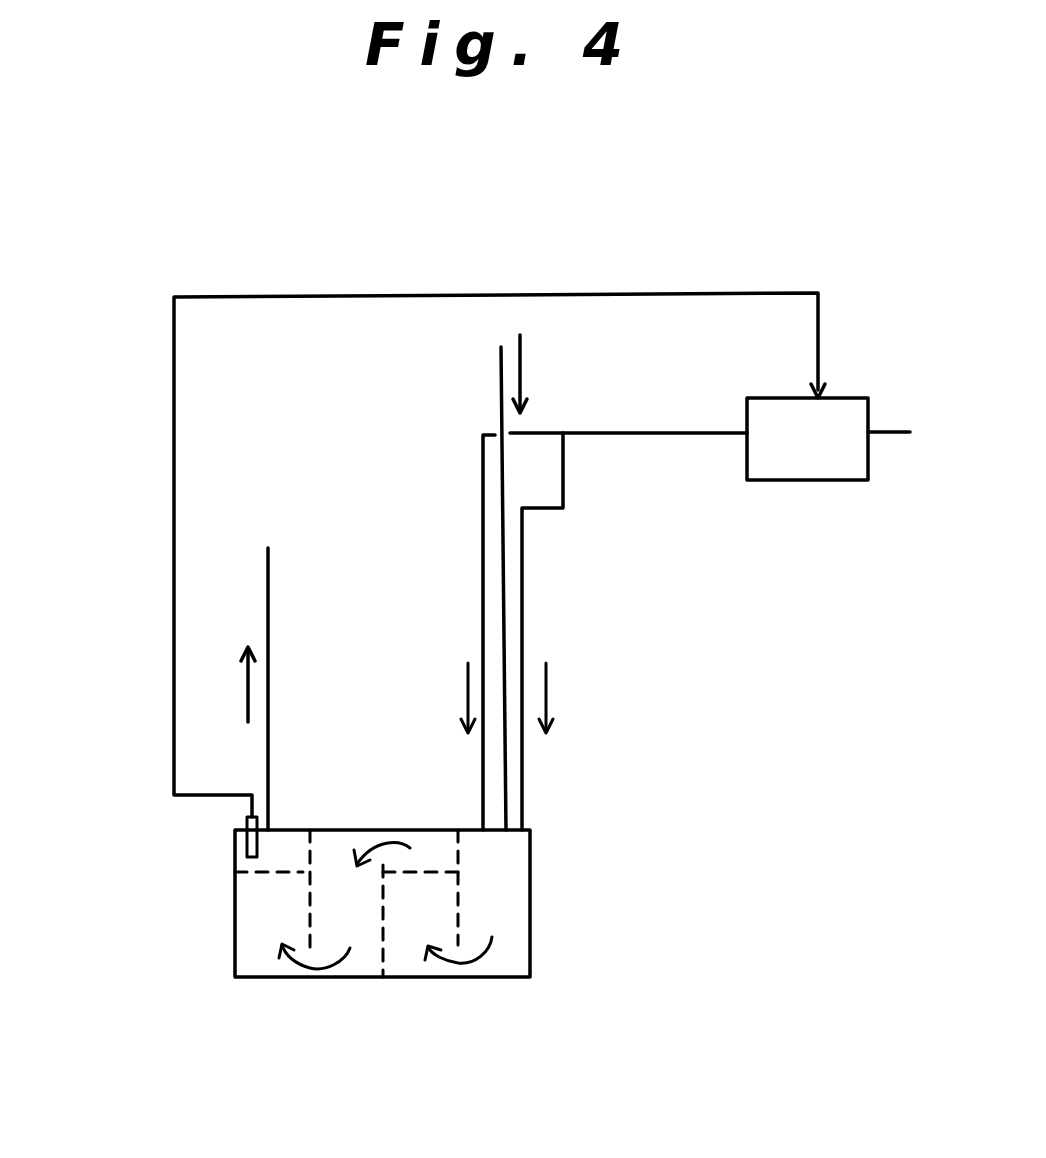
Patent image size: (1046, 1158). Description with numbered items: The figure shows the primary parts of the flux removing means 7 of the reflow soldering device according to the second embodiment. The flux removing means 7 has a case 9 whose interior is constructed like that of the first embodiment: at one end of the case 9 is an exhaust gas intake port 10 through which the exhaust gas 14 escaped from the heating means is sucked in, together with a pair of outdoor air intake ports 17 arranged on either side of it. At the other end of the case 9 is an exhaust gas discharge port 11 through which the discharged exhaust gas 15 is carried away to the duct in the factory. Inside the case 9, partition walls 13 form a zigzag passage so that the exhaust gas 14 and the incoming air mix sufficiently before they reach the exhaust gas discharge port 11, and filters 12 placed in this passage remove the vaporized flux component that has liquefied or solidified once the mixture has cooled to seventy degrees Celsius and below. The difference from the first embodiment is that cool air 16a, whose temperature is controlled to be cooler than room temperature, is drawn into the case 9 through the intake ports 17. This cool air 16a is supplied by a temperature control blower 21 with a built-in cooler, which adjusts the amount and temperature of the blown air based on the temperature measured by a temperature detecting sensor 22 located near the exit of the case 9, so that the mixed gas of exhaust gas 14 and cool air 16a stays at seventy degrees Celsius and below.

The flux removing means 7 is at (482, 978).
The case 9 is at (530, 922).
The exhaust gas intake port 10 is at (507, 772).
The exhaust gas discharge port 11 is at (268, 795).
The filter 12 is at (250, 877).
The partition wall 13 is at (310, 913).
The exhaust gas 14 is at (522, 357).
The discharged exhaust gas 15 is at (247, 688).
The cool air 16a is at (466, 690).
The outdoor air intake port 17 is at (483, 790).
The temperature control blower 21 is at (868, 455).
The temperature detecting sensor 22 is at (247, 838).